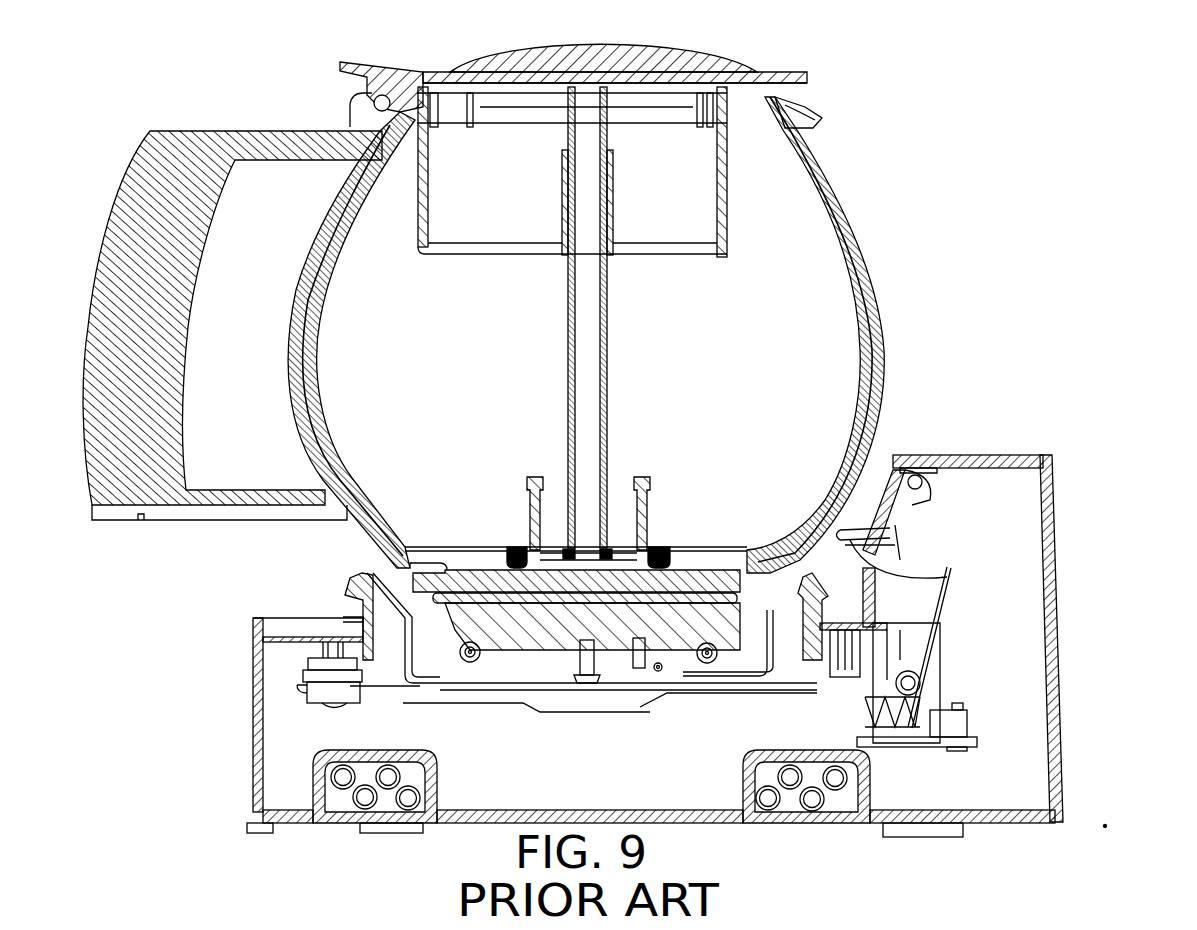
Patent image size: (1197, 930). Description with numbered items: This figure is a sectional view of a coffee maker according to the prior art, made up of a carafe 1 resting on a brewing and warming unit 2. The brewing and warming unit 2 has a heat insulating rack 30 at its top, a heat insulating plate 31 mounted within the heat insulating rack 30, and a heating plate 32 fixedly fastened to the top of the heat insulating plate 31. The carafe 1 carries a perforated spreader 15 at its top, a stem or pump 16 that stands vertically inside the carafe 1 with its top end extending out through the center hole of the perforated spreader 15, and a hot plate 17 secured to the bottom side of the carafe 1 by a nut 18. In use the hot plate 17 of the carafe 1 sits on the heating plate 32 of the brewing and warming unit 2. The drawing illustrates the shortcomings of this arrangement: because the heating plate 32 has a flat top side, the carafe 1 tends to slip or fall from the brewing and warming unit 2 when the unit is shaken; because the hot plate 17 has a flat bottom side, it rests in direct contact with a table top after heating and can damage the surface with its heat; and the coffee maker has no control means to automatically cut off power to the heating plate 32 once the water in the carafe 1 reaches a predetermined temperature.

The carafe 1 is at (948, 262).
The brewing and warming unit 2 is at (1092, 482).
The perforated spreader 15 is at (460, 248).
The stem (pump) 16 is at (608, 347).
The hot plate 17 is at (565, 588).
The nut 18 is at (657, 540).
The heat insulating rack 30 is at (345, 601).
The heat insulating plate 31 is at (399, 572).
The heating plate 32 is at (533, 640).